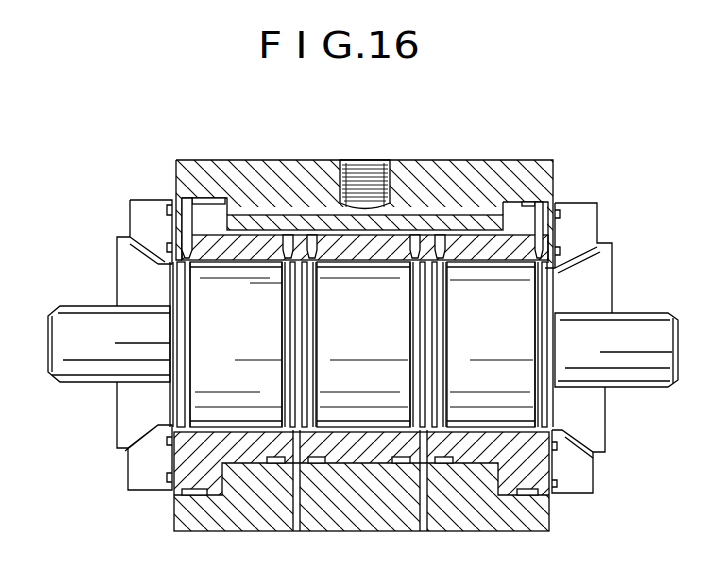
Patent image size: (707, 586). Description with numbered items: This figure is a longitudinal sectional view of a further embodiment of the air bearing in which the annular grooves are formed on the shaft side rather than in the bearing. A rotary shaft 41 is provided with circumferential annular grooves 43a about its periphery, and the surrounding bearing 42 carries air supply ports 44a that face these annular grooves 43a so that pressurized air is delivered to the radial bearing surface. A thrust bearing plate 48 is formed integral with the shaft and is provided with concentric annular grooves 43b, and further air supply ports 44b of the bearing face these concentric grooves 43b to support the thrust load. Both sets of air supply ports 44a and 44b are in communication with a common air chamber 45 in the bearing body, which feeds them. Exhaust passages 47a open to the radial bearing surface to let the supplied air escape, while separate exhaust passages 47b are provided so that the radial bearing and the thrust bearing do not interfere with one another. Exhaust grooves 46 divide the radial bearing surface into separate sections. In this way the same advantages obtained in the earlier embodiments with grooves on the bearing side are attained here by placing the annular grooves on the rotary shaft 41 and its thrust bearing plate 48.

The rotary shaft 41 is at (525, 402).
The bearing 42 is at (192, 453).
The circumferential annular grooves 43a is at (310, 345).
The concentric annular grooves 43b is at (560, 213).
The air supply ports 44a is at (283, 256).
The air supply ports 44b is at (540, 198).
The air chamber 45 is at (213, 212).
The exhaust grooves 46 is at (296, 431).
The exhaust passages 47a is at (297, 532).
The exhaust passages 47b is at (593, 452).
The thrust bearing plate 48 is at (577, 481).